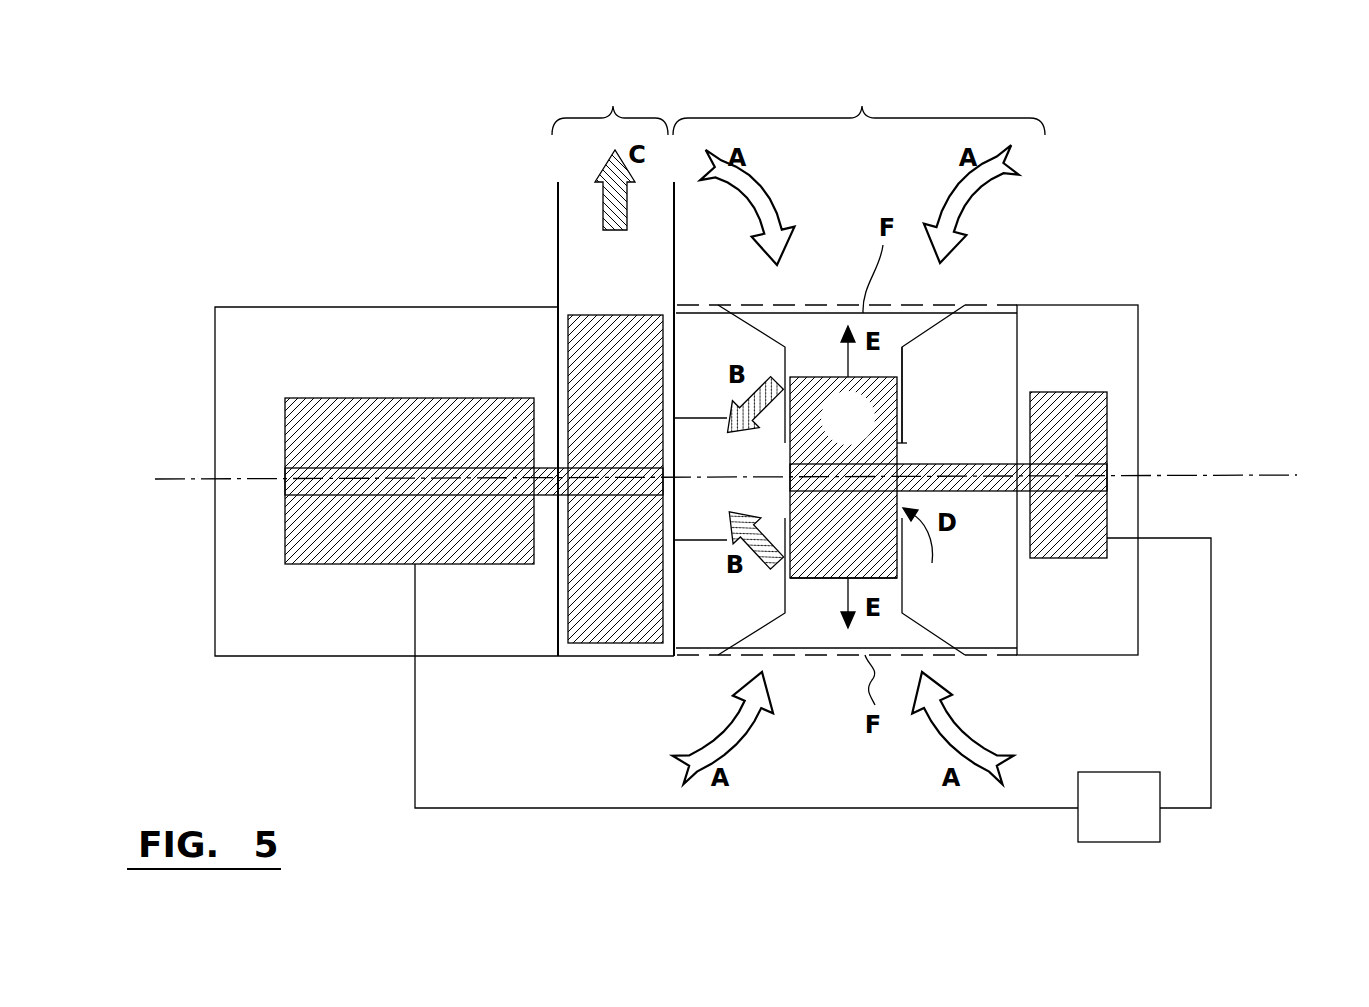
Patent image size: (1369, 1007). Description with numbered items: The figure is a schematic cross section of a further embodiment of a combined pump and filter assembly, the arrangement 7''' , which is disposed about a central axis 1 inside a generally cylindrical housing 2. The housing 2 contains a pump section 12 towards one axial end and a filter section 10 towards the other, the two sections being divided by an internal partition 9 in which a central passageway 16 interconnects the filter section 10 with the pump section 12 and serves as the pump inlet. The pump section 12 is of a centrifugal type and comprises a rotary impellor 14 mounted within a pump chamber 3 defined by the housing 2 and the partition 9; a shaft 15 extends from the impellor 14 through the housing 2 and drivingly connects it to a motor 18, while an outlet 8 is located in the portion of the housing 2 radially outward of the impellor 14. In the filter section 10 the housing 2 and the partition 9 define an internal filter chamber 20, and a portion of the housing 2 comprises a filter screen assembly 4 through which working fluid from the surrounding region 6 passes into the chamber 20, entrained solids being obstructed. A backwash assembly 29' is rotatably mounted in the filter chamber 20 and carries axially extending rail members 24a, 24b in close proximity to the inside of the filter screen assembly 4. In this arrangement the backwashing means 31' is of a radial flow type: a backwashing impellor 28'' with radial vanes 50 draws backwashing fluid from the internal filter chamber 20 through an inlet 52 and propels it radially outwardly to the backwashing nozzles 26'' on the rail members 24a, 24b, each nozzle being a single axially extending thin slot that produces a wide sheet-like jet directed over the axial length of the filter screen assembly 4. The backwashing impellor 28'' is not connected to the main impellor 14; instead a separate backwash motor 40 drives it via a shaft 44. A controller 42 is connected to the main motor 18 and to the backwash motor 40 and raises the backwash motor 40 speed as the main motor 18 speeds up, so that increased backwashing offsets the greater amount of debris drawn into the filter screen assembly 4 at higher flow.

The central axis 1 is at (1245, 476).
The housing 2 is at (661, 657).
The pump chamber 3 is at (582, 280).
The filter screen assembly 4 is at (943, 305).
The surrounding region 6 is at (855, 785).
The pump and filter assembly arrangement 7''' is at (813, 673).
The outlet 8 is at (572, 197).
The internal partition 9 is at (693, 313).
The filter section 10 is at (864, 96).
The pump section 12 is at (614, 108).
The rotary impellor 14 is at (603, 644).
The shaft 15 is at (548, 496).
The central passageway 16 is at (688, 418).
The motor 18 is at (394, 418).
The internal filter chamber 20 is at (737, 617).
The rail member 24a is at (943, 624).
The rail member 24b is at (946, 325).
The backwashing nozzles 26'' is at (846, 476).
The backwashing impellor 28'' is at (843, 477).
The backwash assembly 29' is at (944, 366).
The backwashing means 31' is at (944, 414).
The backwash motor 40 is at (1100, 405).
The controller 42 is at (1137, 835).
The shaft 44 is at (1000, 492).
The radial vanes 50 is at (880, 546).
The inlet 52 is at (907, 455).